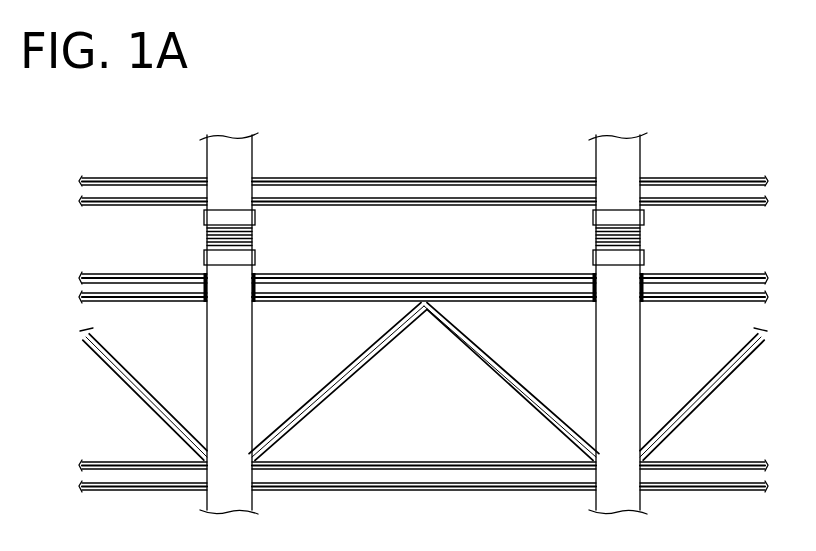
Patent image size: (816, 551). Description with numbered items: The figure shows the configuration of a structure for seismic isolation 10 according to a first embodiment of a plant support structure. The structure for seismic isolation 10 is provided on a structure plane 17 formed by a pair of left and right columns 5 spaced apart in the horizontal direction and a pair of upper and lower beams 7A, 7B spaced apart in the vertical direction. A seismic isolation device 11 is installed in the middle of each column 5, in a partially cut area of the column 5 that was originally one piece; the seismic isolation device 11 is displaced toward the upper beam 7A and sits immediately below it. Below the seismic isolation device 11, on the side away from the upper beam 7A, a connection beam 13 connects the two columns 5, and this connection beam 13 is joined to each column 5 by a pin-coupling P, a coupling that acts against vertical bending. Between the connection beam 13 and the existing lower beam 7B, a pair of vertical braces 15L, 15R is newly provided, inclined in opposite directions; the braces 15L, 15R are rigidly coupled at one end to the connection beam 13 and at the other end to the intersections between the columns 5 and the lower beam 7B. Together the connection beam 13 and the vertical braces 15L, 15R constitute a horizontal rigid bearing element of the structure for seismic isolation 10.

The structure for seismic isolation 10 is at (474, 140).
The column 5 is at (252, 353).
The upper beam 7A is at (157, 178).
The lower beam 7B is at (378, 485).
The seismic isolation device 11 is at (253, 238).
The connection beam 13 is at (103, 273).
The vertical brace 15L is at (307, 420).
The vertical brace 15R is at (137, 400).
The structure plane 17 is at (408, 392).
The pin-coupling P is at (248, 291).